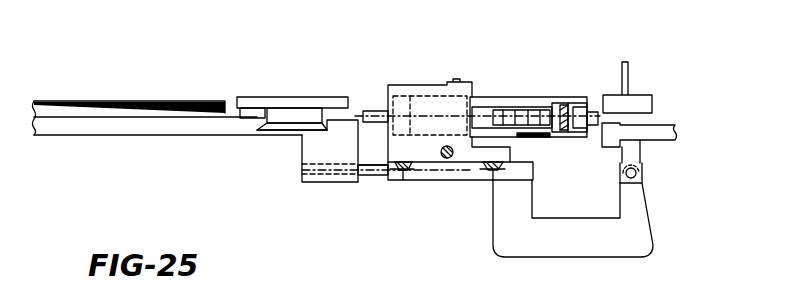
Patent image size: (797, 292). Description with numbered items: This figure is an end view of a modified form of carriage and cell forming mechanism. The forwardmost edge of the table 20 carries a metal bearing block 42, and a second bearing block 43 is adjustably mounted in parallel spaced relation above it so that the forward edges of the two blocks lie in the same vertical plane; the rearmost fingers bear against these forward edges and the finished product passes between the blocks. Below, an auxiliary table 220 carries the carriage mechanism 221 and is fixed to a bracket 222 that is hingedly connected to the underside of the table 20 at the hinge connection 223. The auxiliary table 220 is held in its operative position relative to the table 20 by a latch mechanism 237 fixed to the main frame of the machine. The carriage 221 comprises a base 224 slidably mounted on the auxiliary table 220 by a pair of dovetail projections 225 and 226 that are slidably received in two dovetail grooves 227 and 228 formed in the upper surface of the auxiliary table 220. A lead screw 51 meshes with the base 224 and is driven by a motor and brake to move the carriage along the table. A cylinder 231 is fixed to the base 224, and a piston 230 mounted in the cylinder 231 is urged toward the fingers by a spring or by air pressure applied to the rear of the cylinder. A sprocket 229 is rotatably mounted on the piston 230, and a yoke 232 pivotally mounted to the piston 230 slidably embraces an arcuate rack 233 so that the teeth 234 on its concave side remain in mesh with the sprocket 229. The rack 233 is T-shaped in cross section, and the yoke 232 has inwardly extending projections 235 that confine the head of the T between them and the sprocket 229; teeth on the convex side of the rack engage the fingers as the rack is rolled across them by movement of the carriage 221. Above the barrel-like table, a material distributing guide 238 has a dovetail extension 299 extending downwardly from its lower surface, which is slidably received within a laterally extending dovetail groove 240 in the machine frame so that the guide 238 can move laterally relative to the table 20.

The table 20 is at (669, 130).
The metal bearing block 42 is at (635, 147).
The second bearing block 43 is at (638, 102).
The lead screw 51 is at (453, 159).
The auxiliary table 220 is at (440, 174).
The carriage mechanism 221 is at (455, 72).
The bracket 222 is at (572, 208).
The hinge connection 223 is at (623, 177).
The base 224 is at (402, 172).
The dovetail projection 225 is at (388, 174).
The dovetail projection 226 is at (497, 172).
The dovetail groove 227 is at (410, 172).
The dovetail groove 228 is at (492, 171).
The sprocket 229 is at (523, 115).
The piston 230 is at (478, 111).
The cylinder 231 is at (400, 94).
The yoke 232 is at (556, 109).
The arcuate rack 233 is at (574, 108).
The teeth 234 is at (566, 127).
The inwardly extending projections 235 is at (595, 130).
The latch mechanism 237 is at (363, 175).
The material distributing guide 238 is at (318, 77).
The dovetail groove 240 is at (287, 131).
The dovetail extension 299 is at (270, 124).